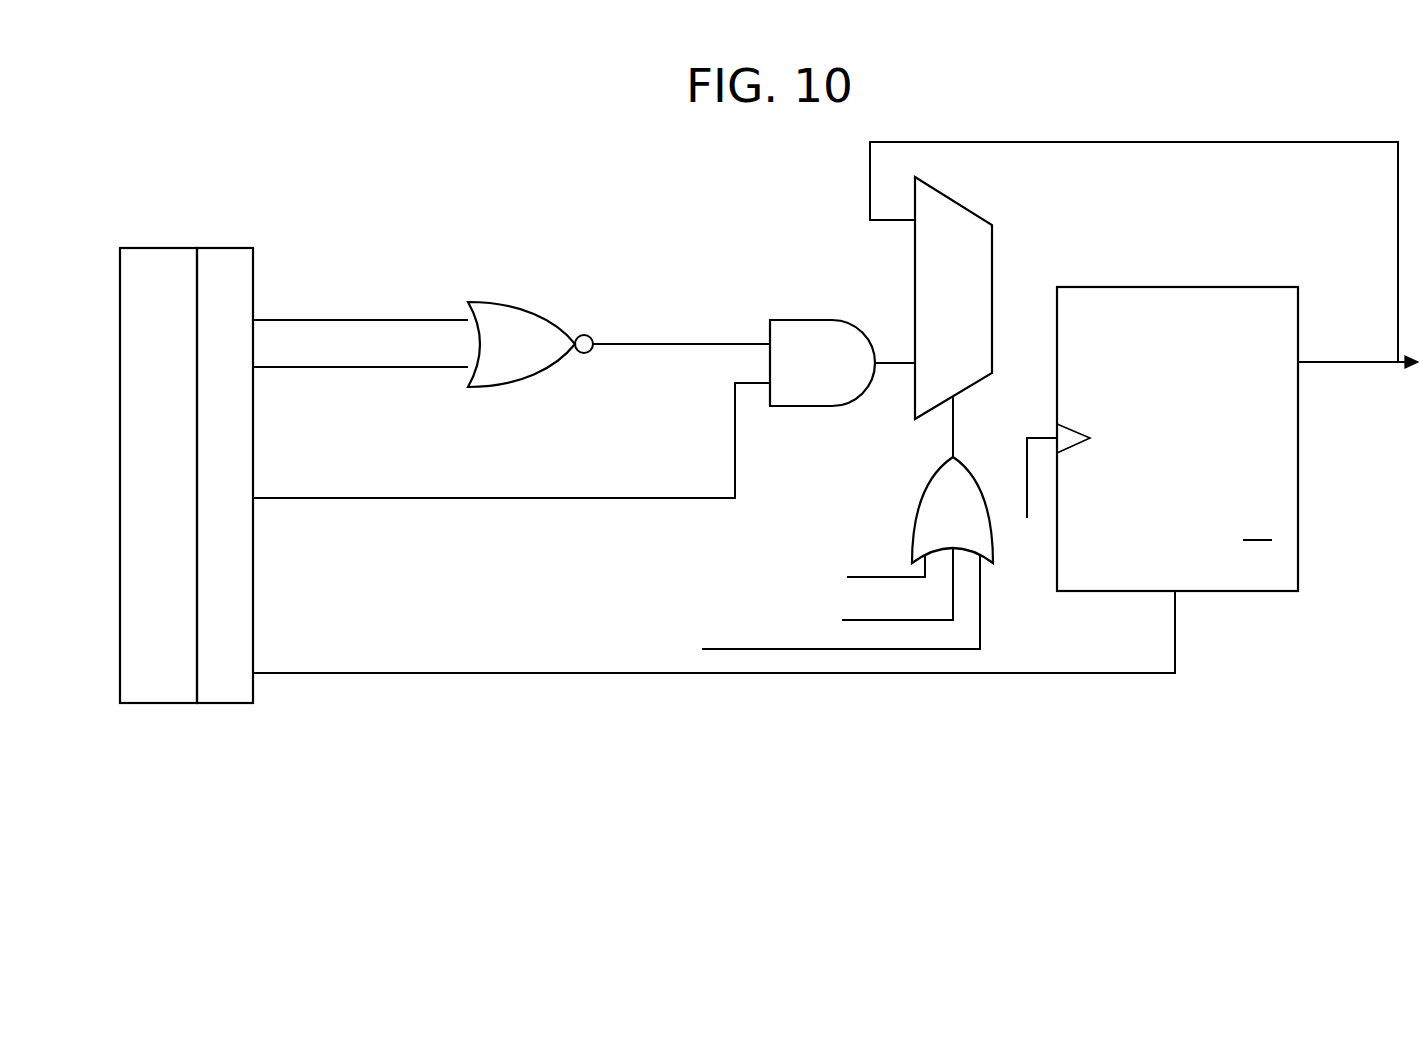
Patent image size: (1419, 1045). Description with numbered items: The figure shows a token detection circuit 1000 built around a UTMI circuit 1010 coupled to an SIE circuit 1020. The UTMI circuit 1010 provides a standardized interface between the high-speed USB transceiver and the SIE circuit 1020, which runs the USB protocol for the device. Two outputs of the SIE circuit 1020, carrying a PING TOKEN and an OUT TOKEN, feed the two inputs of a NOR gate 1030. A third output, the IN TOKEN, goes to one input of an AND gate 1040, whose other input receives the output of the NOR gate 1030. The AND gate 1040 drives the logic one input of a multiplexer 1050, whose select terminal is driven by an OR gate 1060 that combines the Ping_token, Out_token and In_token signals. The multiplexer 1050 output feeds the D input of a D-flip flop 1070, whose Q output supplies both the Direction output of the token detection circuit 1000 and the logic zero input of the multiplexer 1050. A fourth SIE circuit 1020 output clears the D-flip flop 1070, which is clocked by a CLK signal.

The token detection circuit 1000 is at (438, 170).
The USB 2.0 Transceiver Macrocell Interface (UTMI) circuit 1010 is at (143, 247).
The Serial Interface Engine (SIE) circuit 1020 is at (235, 703).
The NOR gate 1030 is at (528, 383).
The AND gate 1040 is at (830, 407).
The multiplexer 1050 is at (915, 302).
The OR gate 1060 is at (912, 518).
The D-flip flop 1070 is at (1068, 591).